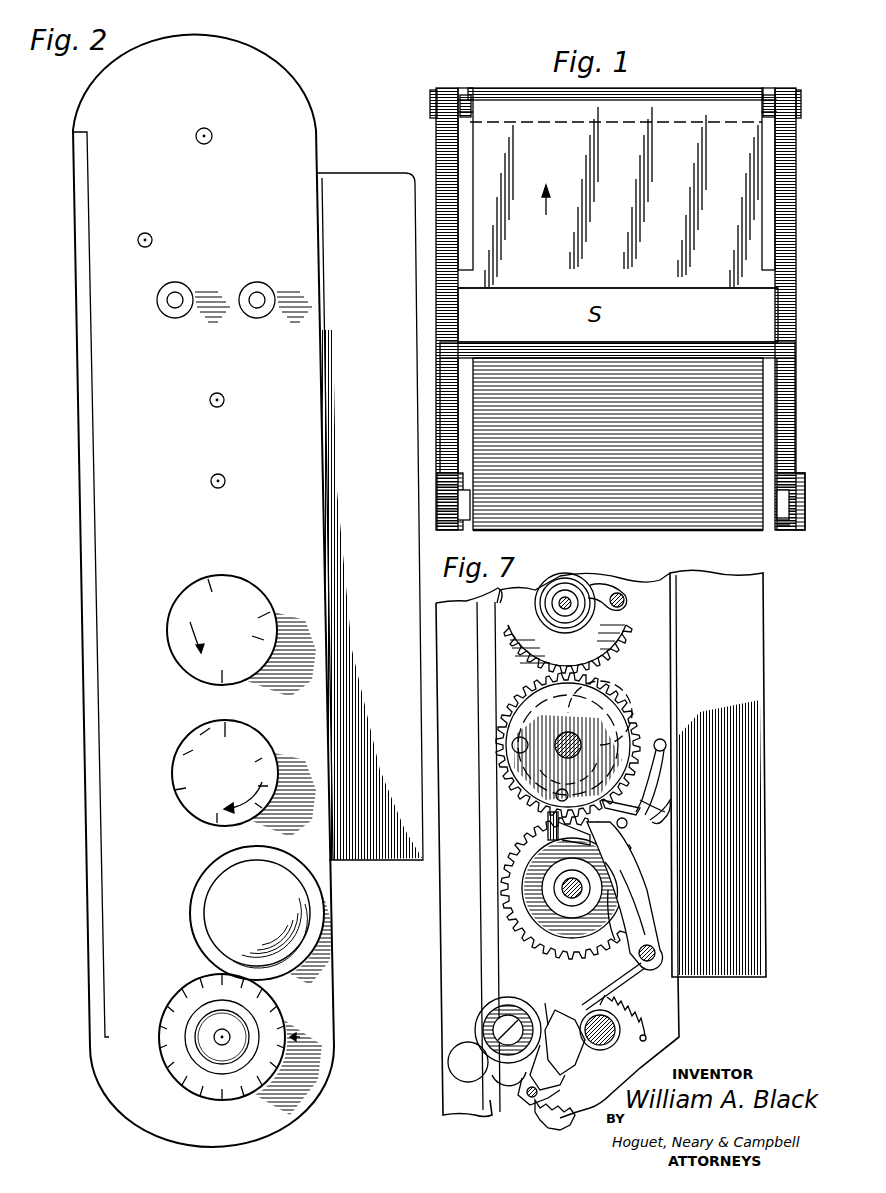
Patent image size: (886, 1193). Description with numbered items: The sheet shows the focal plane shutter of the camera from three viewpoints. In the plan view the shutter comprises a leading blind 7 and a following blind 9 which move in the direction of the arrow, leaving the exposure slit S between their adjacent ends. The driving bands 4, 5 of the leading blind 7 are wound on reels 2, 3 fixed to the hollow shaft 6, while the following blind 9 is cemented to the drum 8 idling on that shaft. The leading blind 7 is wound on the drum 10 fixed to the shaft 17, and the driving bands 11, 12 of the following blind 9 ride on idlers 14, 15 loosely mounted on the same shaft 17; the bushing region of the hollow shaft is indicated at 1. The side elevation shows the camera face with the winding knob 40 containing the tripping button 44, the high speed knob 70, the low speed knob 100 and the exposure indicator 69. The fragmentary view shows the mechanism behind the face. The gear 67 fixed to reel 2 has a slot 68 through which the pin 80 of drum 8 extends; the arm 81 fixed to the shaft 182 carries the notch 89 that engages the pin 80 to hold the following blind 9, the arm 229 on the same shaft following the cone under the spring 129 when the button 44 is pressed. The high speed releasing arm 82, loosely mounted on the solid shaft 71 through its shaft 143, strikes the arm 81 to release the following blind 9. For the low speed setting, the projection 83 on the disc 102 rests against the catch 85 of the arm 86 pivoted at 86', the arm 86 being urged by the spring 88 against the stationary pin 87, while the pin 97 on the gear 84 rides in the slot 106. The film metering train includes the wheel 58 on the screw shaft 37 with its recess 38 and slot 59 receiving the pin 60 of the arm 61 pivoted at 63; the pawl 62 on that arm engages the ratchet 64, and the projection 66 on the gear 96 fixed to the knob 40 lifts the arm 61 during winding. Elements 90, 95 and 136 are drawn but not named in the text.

In FIG. 1, the shaft end 1 is at (790, 535).
In FIG. 1, the reel 2 is at (800, 530).
In FIG. 1, the reel 3 is at (448, 531).
In FIG. 1, the driving band 4 is at (790, 425).
In FIG. 1, the driving band 5 is at (441, 430).
In FIG. 1, the hollow shaft 6 is at (779, 532).
In FIG. 1, the leading blind 7 is at (618, 188).
In FIG. 1, the drum 8 is at (770, 528).
In FIG. 1, the following blind 9 is at (668, 372).
In FIG. 1, the drum 10 is at (768, 93).
In FIG. 1, the driving band 11 is at (440, 155).
In FIG. 1, the driving band 12 is at (780, 240).
In FIG. 1, the idler 14 is at (798, 90).
In FIG. 1, the idler 15 is at (430, 104).
In FIG. 1, the shaft 17 is at (465, 93).
In FIG. 7, the screw shaft 37 is at (495, 1023).
In FIG. 7, the recess 38 is at (498, 997).
In FIG. 2, the winding knob 40 is at (217, 868).
In FIG. 2, the button 44 is at (218, 908).
In FIG. 7, the wheel 58 is at (480, 995).
In FIG. 7, the slot 59 is at (547, 997).
In FIG. 7, the pin 60 is at (557, 1025).
In FIG. 7, the arm 61 is at (527, 1080).
In FIG. 7, the pawl 62 is at (580, 1083).
In FIG. 7, the pivot 63 is at (532, 1098).
In FIG. 7, the ratchet 64 is at (548, 1118).
In FIG. 7, the projection 66 is at (598, 1052).
In FIG. 7, the gear 67 is at (502, 895).
In FIG. 7, the slot 68 is at (540, 918).
In FIG. 2, the exposure indicator 69 is at (183, 1073).
In FIG. 2, the high speed knob 70 is at (258, 749).
In FIG. 7, the shaft 71 is at (560, 887).
In FIG. 7, the pin 80 is at (617, 863).
In FIG. 7, the arm 81 is at (630, 915).
In FIG. 7, the releasing arm 82 is at (670, 927).
In FIG. 7, the projection 83 is at (547, 818).
In FIG. 7, the gear 84 is at (515, 779).
In FIG. 7, the projection 85 is at (637, 790).
In FIG. 7, the arm 86 is at (686, 798).
In FIG. 7, the pivot 86' is at (682, 769).
In FIG. 7, the stationary pin 87 is at (630, 823).
In FIG. 7, the spring 88 is at (664, 793).
In FIG. 7, the notch 89 is at (625, 895).
In FIG. 7, the gear 90 is at (612, 652).
In FIG. 7, the roller 95 is at (624, 630).
In FIG. 7, the gear 96 is at (583, 1000).
In FIG. 7, the pin 97 is at (500, 742).
In FIG. 2, the low speed knob 100 is at (243, 592).
In FIG. 7, the disc 102 is at (603, 699).
In FIG. 7, the slot 106 is at (610, 717).
In FIG. 7, the spring 129 is at (643, 1036).
In FIG. 7, the pin 136 is at (647, 1038).
In FIG. 7, the shaft 143 is at (573, 890).
In FIG. 7, the shaft 182 is at (647, 962).
In FIG. 7, the arm 229 is at (637, 1016).